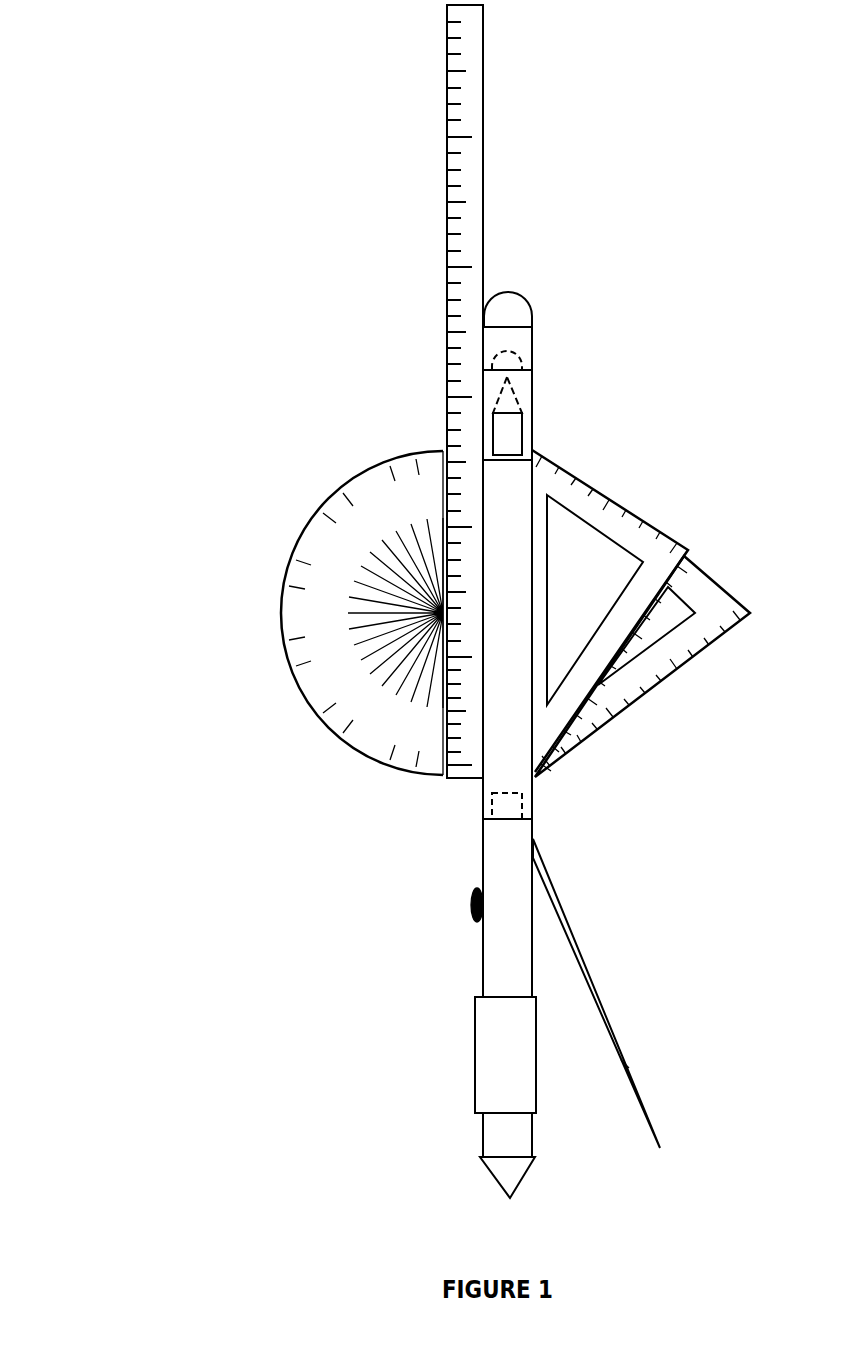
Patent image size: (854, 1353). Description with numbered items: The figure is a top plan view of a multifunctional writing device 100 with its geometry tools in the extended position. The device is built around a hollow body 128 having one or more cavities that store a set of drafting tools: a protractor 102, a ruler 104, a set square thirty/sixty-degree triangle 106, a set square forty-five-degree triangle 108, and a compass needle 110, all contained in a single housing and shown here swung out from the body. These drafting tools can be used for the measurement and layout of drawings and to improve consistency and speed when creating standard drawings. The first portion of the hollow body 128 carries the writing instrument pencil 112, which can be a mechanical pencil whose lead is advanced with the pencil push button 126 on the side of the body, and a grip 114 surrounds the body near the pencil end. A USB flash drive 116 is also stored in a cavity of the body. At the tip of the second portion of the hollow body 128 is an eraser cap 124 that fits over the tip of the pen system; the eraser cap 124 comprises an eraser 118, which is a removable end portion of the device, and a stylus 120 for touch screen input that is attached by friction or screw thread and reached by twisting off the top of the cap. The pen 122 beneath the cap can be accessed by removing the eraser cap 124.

The multifunctional writing device 100 is at (142, 1185).
The protractor 102 is at (281, 615).
The ruler 104 is at (444, 169).
The set square thirty/sixty-degree triangle 106 is at (654, 512).
The set square forty-five-degree triangle 108 is at (656, 708).
The compass needle 110 is at (606, 979).
The pencil 112 is at (483, 1177).
The grip 114 is at (476, 1056).
The USB flash drive 116 is at (490, 808).
The eraser 118 is at (529, 295).
The stylus 120 is at (529, 355).
The pen 122 is at (529, 398).
The eraser cap 124 is at (535, 437).
The pencil push button 126 is at (471, 905).
The hollow body 128 is at (483, 856).